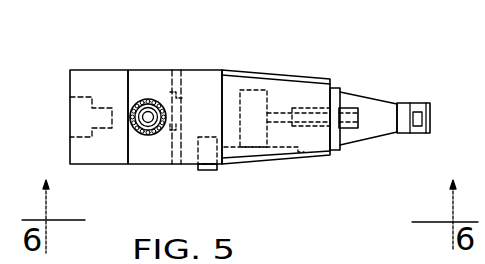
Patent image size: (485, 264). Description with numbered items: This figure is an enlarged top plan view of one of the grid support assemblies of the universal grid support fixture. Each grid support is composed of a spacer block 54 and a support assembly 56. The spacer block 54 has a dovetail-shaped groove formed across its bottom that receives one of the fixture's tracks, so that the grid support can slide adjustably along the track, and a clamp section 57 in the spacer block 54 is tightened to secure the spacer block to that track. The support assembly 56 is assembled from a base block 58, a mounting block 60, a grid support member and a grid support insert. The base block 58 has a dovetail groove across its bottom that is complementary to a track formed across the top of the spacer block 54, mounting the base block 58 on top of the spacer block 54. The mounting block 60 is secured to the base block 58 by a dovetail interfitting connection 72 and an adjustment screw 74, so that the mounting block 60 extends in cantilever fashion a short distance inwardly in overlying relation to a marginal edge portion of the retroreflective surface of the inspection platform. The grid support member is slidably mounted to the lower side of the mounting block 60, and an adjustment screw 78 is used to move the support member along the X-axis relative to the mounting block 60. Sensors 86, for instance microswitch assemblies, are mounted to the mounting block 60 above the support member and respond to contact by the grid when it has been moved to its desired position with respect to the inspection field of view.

The spacer block 54 is at (100, 75).
The support assembly 56 is at (295, 70).
The clamp section 57 is at (82, 117).
The base block 58 is at (153, 157).
The mounting block 60 is at (253, 70).
The dovetail interfitting connection 72 is at (176, 64).
The adjustment screw 74 is at (157, 97).
The adjustment screw 78 is at (210, 171).
The sensors 86 is at (287, 108).